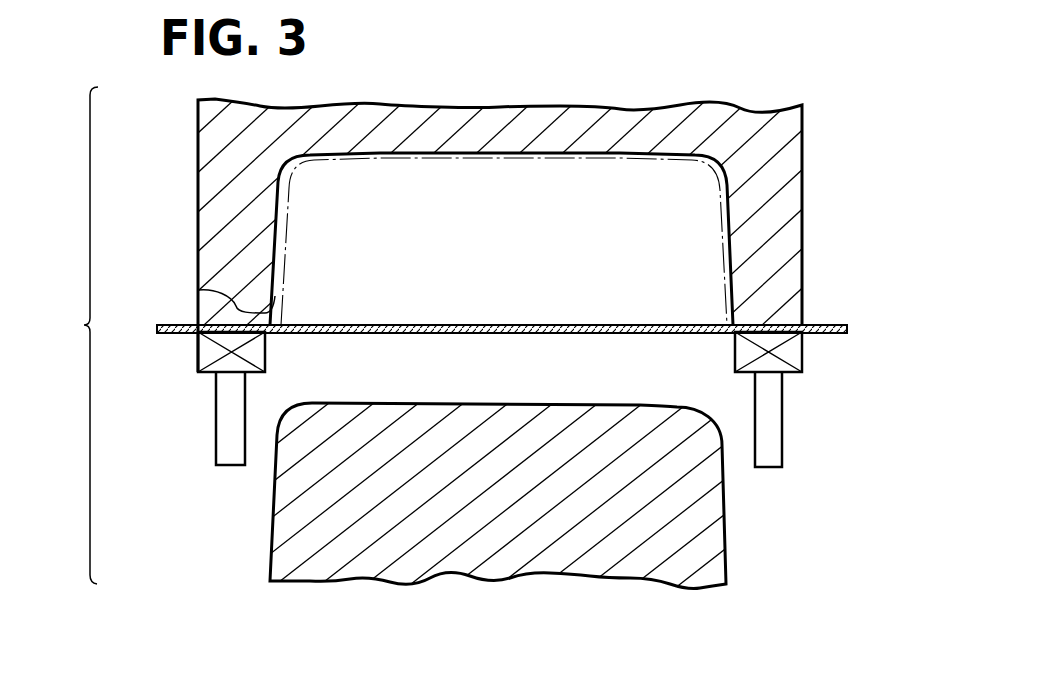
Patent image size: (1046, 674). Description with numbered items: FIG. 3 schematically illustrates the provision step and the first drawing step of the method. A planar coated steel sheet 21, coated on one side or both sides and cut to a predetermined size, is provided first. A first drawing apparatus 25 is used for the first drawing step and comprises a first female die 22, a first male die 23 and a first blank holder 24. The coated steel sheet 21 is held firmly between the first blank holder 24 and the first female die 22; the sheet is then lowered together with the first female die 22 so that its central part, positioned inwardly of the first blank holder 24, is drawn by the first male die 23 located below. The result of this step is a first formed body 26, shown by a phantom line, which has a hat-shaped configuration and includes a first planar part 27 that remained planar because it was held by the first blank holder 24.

The coated steel sheet 21 is at (473, 325).
The first female die 22 is at (198, 193).
The first male die 23 is at (270, 532).
The first blank holder 24 is at (198, 352).
The first drawing apparatus 25 is at (84, 325).
The first formed body 26 is at (486, 155).
The first planar part 27 is at (198, 290).